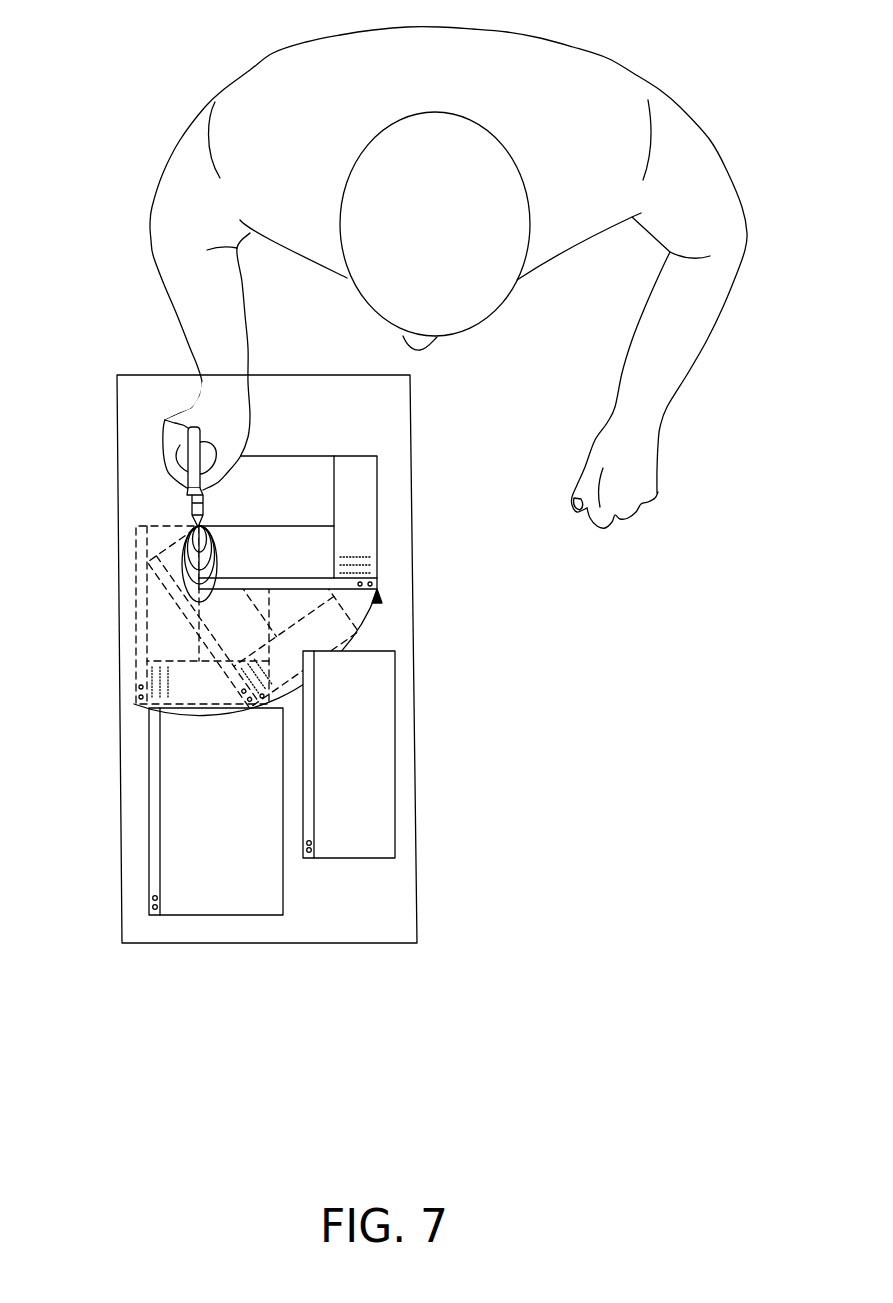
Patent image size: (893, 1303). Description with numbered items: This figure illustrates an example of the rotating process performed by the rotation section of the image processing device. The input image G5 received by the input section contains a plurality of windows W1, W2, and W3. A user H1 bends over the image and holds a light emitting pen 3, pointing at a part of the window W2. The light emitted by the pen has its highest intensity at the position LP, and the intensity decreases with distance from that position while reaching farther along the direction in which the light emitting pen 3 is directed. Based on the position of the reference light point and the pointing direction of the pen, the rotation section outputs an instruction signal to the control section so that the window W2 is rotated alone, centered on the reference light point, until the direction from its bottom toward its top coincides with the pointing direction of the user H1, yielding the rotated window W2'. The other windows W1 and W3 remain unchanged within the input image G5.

The user H1 is at (207, 405).
The input image G5 is at (289, 375).
The light emitting pen 3 is at (165, 421).
The position of highest light intensity LP is at (196, 524).
The rotated window W2' is at (337, 522).
The window W2 is at (203, 597).
The window W1 is at (149, 803).
The window W3 is at (395, 810).